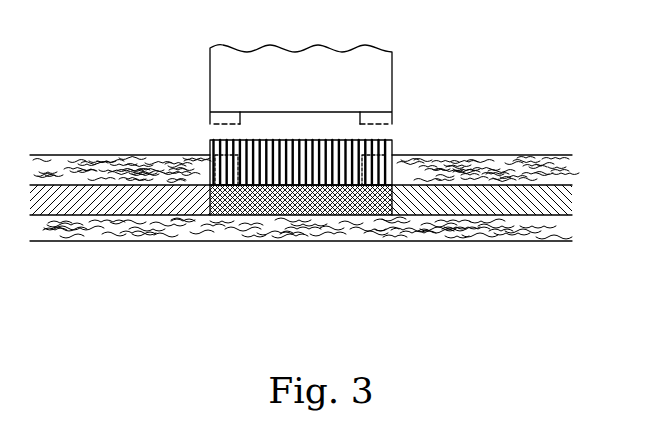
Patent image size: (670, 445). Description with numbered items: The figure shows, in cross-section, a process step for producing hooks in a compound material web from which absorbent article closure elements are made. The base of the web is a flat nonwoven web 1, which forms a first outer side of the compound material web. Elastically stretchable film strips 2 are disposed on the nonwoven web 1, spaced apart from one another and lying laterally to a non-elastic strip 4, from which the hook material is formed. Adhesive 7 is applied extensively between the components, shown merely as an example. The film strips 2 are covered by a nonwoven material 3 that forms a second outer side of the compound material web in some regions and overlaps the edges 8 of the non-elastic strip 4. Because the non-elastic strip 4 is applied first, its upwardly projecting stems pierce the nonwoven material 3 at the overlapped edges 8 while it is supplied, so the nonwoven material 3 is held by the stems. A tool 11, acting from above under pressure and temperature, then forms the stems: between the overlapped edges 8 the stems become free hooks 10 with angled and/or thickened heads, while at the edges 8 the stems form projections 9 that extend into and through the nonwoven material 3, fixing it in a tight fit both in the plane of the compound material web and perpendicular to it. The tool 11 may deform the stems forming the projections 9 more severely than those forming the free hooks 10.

The nonwoven web 1 is at (480, 225).
The elastically stretchable film strips 2 is at (572, 199).
The nonwoven material 3 is at (560, 156).
The non-elastic strip 4 is at (254, 204).
The adhesive 7 is at (522, 186).
The edges 8 is at (236, 190).
The projections 9 is at (206, 129).
The free hooks 10 is at (342, 165).
The tool 11 is at (375, 77).